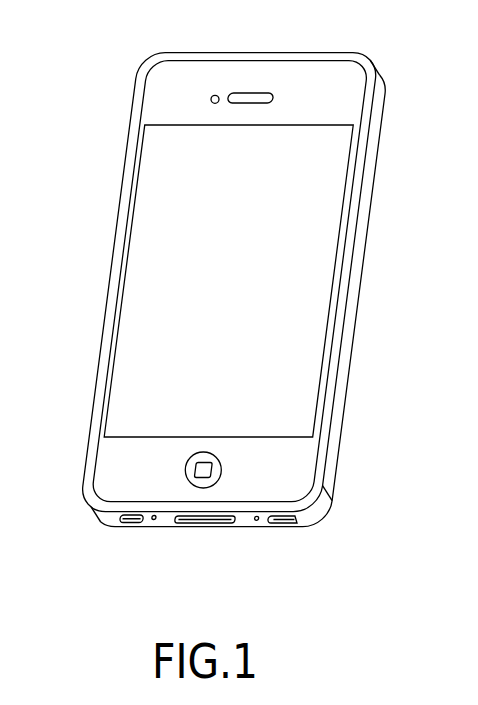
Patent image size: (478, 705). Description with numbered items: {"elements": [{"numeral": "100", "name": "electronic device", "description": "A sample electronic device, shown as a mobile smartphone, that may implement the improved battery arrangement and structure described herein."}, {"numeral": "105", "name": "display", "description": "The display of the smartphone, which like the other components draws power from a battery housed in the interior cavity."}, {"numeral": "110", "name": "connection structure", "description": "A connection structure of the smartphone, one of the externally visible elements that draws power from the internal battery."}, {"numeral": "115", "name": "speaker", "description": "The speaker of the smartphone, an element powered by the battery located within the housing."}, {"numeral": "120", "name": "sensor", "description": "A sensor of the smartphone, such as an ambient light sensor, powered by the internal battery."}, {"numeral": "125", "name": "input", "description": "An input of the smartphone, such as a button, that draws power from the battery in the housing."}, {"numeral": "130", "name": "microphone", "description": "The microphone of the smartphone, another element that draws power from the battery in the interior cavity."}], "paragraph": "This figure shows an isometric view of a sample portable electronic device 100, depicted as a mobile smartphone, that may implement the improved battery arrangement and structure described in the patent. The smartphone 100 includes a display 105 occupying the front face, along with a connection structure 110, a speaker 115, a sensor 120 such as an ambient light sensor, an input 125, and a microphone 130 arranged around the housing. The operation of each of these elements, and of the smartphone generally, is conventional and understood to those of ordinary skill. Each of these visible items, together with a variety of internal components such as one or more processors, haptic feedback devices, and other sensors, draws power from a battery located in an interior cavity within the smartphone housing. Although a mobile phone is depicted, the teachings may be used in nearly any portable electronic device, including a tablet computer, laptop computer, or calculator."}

The mobile device 100 is at (405, 173).
The display 105 is at (322, 182).
The connector port 110 is at (193, 518).
The speaker 115 is at (253, 93).
The camera 120 is at (212, 96).
The home button 125 is at (185, 471).
The microphone 130 is at (275, 524).